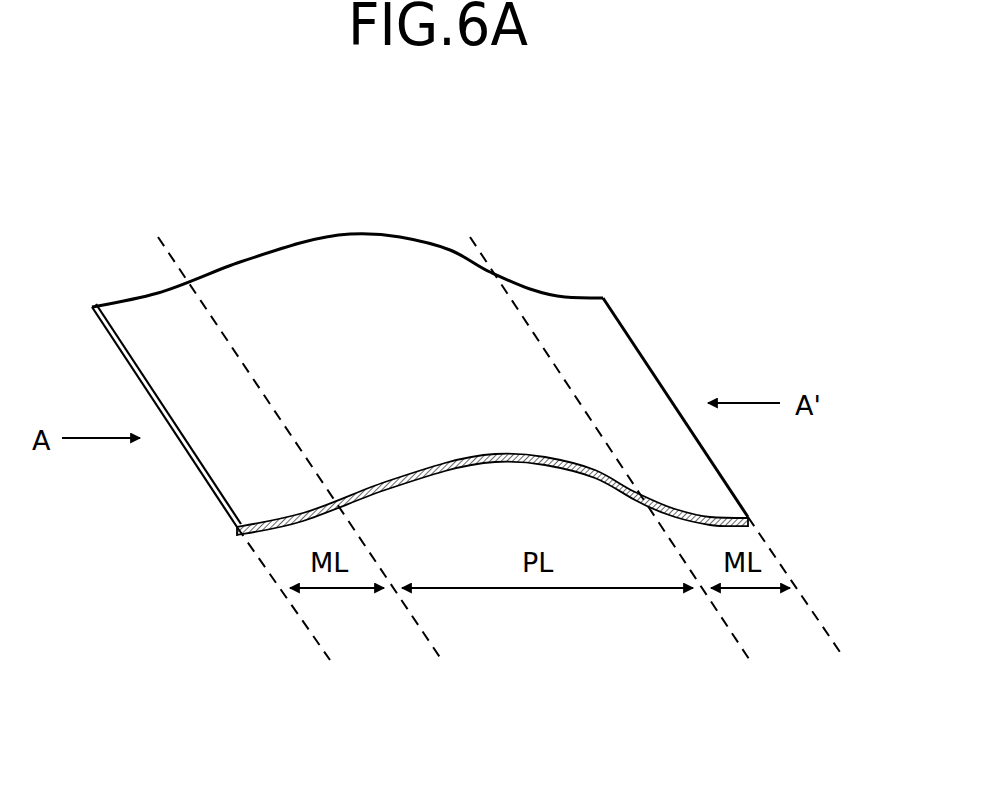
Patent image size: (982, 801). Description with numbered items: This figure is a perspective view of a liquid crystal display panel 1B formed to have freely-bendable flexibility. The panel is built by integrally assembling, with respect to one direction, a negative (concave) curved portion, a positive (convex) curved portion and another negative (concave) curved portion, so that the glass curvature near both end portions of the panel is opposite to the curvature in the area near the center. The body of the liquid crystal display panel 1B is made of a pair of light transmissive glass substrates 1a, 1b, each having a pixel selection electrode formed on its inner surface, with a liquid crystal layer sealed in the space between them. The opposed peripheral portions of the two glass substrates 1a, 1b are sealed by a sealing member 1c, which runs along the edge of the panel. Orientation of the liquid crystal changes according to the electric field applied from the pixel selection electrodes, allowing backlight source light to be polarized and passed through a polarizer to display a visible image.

The liquid crystal display panel 1B is at (420, 337).
The light transmissive glass substrate 1a is at (420, 262).
The light transmissive glass substrate 1b is at (490, 456).
The sealing member 1c is at (197, 477).